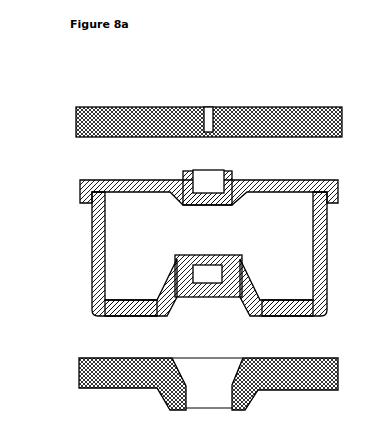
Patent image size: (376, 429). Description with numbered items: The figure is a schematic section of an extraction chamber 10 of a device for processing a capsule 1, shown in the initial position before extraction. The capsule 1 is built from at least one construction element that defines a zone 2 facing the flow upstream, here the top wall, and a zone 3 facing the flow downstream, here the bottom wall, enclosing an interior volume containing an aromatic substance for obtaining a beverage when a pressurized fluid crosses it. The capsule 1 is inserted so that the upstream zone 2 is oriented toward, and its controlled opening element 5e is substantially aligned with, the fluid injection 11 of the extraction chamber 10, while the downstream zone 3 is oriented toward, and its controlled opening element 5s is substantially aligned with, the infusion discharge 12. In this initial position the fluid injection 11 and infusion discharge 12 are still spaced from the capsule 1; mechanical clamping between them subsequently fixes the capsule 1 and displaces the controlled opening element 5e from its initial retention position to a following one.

The extraction chamber 10 is at (177, 122).
The fluid injection 11 is at (158, 133).
The capsule 1 is at (186, 252).
The zone of capsule facing the flow upstream 2 is at (209, 186).
The controlled opening element 5e is at (207, 196).
The controlled opening element 5s is at (208, 286).
The zone of capsule facing the flow downstream 3 is at (209, 295).
The infusion discharge 12 is at (208, 378).